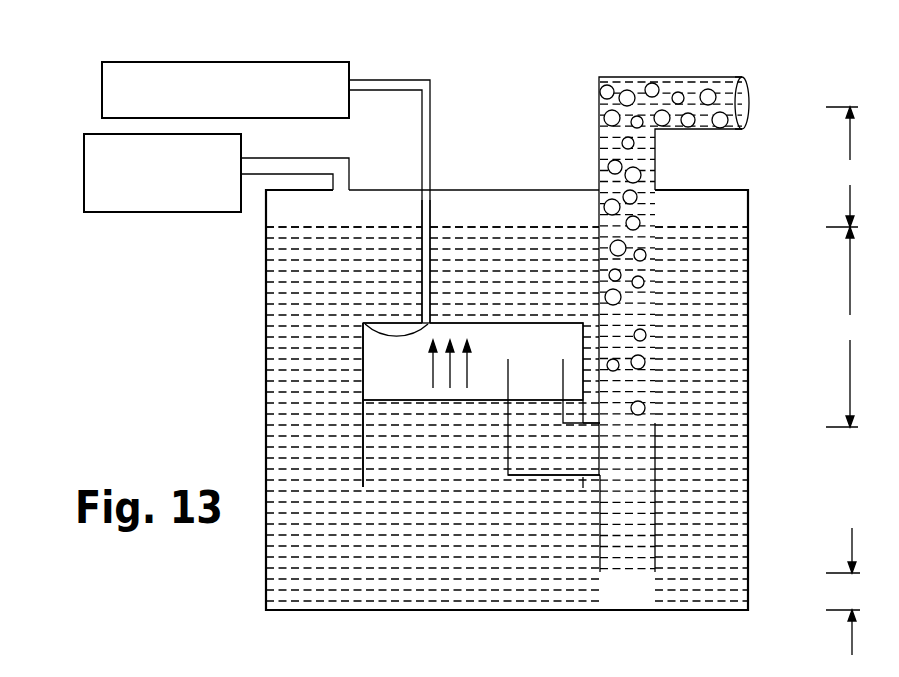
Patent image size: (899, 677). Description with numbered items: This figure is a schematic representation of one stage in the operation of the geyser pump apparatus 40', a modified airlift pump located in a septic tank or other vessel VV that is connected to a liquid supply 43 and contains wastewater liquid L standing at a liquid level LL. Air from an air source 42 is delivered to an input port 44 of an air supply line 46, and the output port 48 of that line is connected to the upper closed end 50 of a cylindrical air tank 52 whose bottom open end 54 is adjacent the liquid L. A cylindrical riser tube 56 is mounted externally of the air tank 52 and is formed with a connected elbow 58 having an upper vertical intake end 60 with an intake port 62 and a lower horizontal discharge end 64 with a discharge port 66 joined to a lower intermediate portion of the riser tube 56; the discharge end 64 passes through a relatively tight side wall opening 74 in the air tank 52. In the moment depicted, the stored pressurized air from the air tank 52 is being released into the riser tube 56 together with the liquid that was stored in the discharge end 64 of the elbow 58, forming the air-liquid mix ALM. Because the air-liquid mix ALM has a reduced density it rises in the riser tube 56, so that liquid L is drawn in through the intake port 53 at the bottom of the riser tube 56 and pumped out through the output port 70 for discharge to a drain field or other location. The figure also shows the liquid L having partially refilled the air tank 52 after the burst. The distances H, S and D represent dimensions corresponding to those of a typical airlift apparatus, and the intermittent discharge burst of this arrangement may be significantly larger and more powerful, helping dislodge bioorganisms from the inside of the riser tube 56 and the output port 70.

The geyser pump apparatus 40' is at (522, 310).
The air source 42 is at (102, 88).
The liquid supply 43 is at (160, 213).
The input port 44 is at (350, 80).
The air supply line 46 is at (432, 150).
The output port 48 is at (368, 322).
The upper closed end 50 is at (447, 322).
The air tank 52 is at (351, 342).
The intake port 53 is at (618, 582).
The bottom open end 54 is at (392, 486).
The riser tube 56 is at (662, 398).
The connected elbow 58 is at (506, 484).
The upper vertical intake end 60 is at (572, 372).
The intake port 62 is at (537, 360).
The lower horizontal discharge end 64 is at (555, 478).
The discharge port 66 is at (603, 447).
The output port 70 is at (740, 107).
The side wall opening 74 is at (584, 421).
The liquid L is at (507, 414).
The liquid level LL is at (515, 223).
The air-liquid mix ALM is at (647, 165).
The vessel VV is at (748, 452).
The distance H is at (843, 167).
The distance S is at (842, 327).
The distance D is at (843, 591).